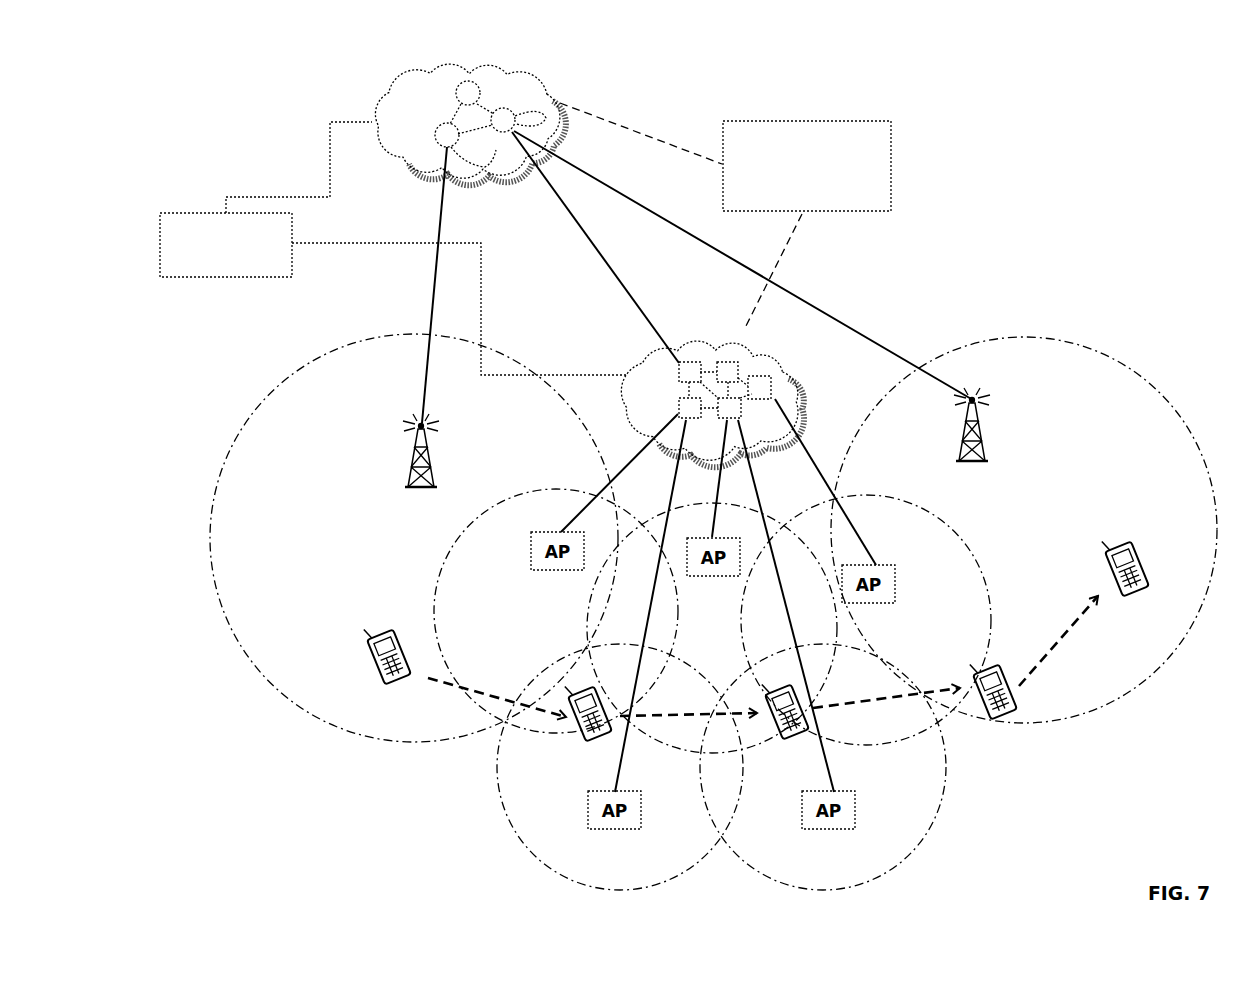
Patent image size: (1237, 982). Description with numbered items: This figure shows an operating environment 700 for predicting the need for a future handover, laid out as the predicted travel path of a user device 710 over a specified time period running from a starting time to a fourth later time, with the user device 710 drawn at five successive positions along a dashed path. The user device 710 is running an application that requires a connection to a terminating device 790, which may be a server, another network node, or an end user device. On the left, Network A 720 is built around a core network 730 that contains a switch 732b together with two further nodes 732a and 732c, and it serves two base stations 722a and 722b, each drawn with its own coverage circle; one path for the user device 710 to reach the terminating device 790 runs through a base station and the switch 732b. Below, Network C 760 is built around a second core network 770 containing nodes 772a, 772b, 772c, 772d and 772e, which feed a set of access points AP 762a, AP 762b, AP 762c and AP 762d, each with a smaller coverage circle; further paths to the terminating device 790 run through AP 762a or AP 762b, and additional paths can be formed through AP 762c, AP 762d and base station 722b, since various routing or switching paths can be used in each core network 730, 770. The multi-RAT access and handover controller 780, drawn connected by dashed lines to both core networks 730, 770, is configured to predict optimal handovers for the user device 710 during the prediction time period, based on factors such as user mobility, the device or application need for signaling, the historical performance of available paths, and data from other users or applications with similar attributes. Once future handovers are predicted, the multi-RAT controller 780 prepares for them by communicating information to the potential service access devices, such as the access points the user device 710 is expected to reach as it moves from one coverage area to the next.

The operating environment 700 is at (1150, 72).
The user device 710 is at (750, 651).
The Network A 720 is at (318, 79).
The base station tower of Network A 722a is at (398, 450).
The base station 722b is at (982, 436).
The core network 730 is at (552, 86).
The network node 732a is at (476, 172).
The switch 732b is at (446, 71).
The network node 732c is at (548, 127).
The Network C 760 is at (990, 874).
The AP 762a is at (620, 767).
The AP 762b is at (556, 611).
The AP 762c is at (823, 767).
The AP 762d is at (712, 628).
The core network 770 is at (712, 392).
The network node 772a is at (703, 420).
The network node 772b is at (669, 380).
The network node 772c is at (750, 413).
The network node 772d is at (729, 362).
The network node 772e is at (772, 381).
The multi-RAT controller 780 is at (868, 214).
The terminating device 790 is at (393, 248).